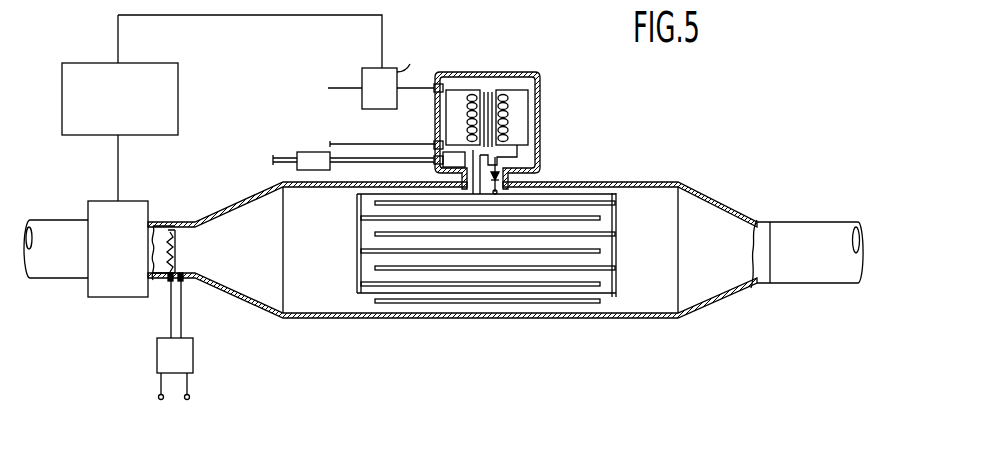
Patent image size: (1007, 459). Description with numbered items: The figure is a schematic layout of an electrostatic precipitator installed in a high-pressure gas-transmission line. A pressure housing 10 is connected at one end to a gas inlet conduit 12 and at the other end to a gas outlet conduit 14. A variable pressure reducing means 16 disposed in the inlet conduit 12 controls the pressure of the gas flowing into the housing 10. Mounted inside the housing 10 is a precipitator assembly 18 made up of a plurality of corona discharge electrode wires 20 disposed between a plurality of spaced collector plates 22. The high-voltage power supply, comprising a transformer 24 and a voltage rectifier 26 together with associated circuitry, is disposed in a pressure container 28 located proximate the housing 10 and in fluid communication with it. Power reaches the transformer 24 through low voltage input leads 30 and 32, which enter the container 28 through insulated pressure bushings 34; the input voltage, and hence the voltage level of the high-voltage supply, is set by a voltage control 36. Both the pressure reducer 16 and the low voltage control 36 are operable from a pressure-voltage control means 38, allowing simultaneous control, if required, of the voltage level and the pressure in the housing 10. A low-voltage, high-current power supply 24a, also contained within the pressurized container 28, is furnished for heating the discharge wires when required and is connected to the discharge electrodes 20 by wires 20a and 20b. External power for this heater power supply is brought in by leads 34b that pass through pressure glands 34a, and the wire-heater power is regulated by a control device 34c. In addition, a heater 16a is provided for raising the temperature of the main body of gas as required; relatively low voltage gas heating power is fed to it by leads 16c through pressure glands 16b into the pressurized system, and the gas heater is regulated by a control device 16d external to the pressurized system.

The pressure housing 10 is at (612, 183).
The gas inlet conduit 12 is at (60, 219).
The gas outlet conduit 14 is at (792, 232).
The variable pressure reducing means 16 is at (126, 254).
The heater 16a is at (163, 232).
The pressure glands 16b is at (180, 281).
The leads 16c is at (171, 315).
The control device 16d is at (187, 363).
The precipitator assembly 18 is at (450, 299).
The corona discharge electrode wires 20 is at (608, 262).
The wire 20a is at (616, 217).
The wire 20b is at (357, 216).
The collector plates 22 is at (386, 198).
The transformer 24 is at (507, 118).
The low-voltage, high-current power supply 24a is at (437, 154).
The voltage rectifier 26 is at (534, 177).
The pressure container 28 is at (527, 72).
The low voltage input lead 30 is at (350, 87).
The low voltage input lead 32 is at (351, 142).
The insulated pressure bushings 34 is at (436, 92).
The pressure glands 34a is at (434, 163).
The leads 34b is at (279, 158).
The control device 34c is at (312, 152).
The voltage control 36 is at (387, 98).
The pressure-voltage control means 38 is at (178, 106).